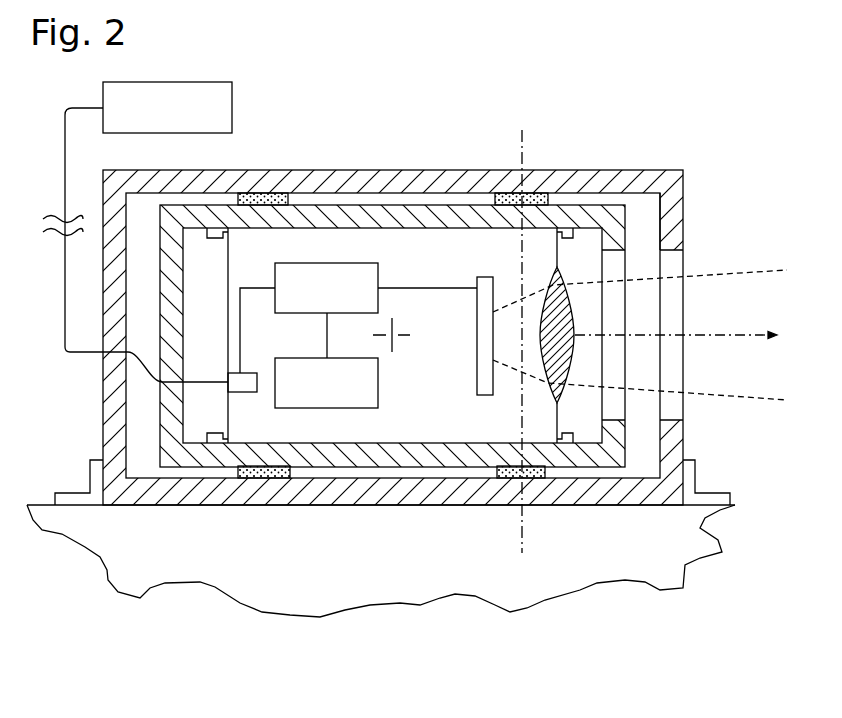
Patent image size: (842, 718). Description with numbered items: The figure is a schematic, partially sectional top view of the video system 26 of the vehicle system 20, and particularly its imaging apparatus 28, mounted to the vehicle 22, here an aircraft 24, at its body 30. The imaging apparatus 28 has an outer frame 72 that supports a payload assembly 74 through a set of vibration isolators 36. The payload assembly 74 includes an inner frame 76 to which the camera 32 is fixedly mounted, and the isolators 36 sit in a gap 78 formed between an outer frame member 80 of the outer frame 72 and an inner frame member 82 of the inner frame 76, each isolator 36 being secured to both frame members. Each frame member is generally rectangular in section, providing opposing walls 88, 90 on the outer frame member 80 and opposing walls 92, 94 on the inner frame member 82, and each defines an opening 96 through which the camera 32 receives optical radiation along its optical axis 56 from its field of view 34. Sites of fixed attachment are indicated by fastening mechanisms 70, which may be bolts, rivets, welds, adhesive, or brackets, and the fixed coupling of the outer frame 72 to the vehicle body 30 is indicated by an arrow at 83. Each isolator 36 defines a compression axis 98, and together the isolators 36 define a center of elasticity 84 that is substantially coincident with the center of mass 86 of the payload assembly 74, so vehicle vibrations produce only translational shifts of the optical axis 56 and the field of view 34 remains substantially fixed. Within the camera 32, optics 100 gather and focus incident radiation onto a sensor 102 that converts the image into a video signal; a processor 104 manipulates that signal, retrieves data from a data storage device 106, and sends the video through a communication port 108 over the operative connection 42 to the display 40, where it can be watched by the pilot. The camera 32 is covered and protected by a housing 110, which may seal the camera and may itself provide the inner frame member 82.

The vehicle system 20 is at (625, 657).
The vehicle 22 is at (608, 630).
The aircraft 24 is at (586, 603).
The video system 26 is at (275, 115).
The imaging apparatus 28 is at (401, 148).
The body 30 is at (500, 607).
The camera 32 is at (222, 299).
The field of view 34 is at (720, 398).
The vibration isolators 36 is at (272, 196).
The display 40 is at (191, 78).
The operative connection 42 is at (63, 270).
The optical axis 56 is at (693, 338).
The fastening mechanisms 70 is at (216, 238).
The outer frame 72 is at (412, 334).
The payload assembly 74 is at (409, 337).
The inner frame 76 is at (604, 200).
The gap 78 is at (620, 470).
The outer frame member 80 is at (683, 197).
The inner frame member 82 is at (624, 240).
The fixed coupling 83 is at (746, 498).
The center of elasticity 84 is at (395, 340).
The center of mass 86 is at (400, 334).
The wall 88 is at (150, 197).
The wall 90 is at (140, 478).
The wall 92 is at (210, 205).
The wall 94 is at (205, 467).
The opening 96 is at (665, 250).
The compression axis 98 is at (516, 250).
The optics 100 is at (530, 347).
The sensor 102 is at (470, 378).
The processor 104 is at (320, 263).
The data storage device 106 is at (318, 358).
The communication port 108 is at (245, 393).
The housing 110 is at (225, 336).